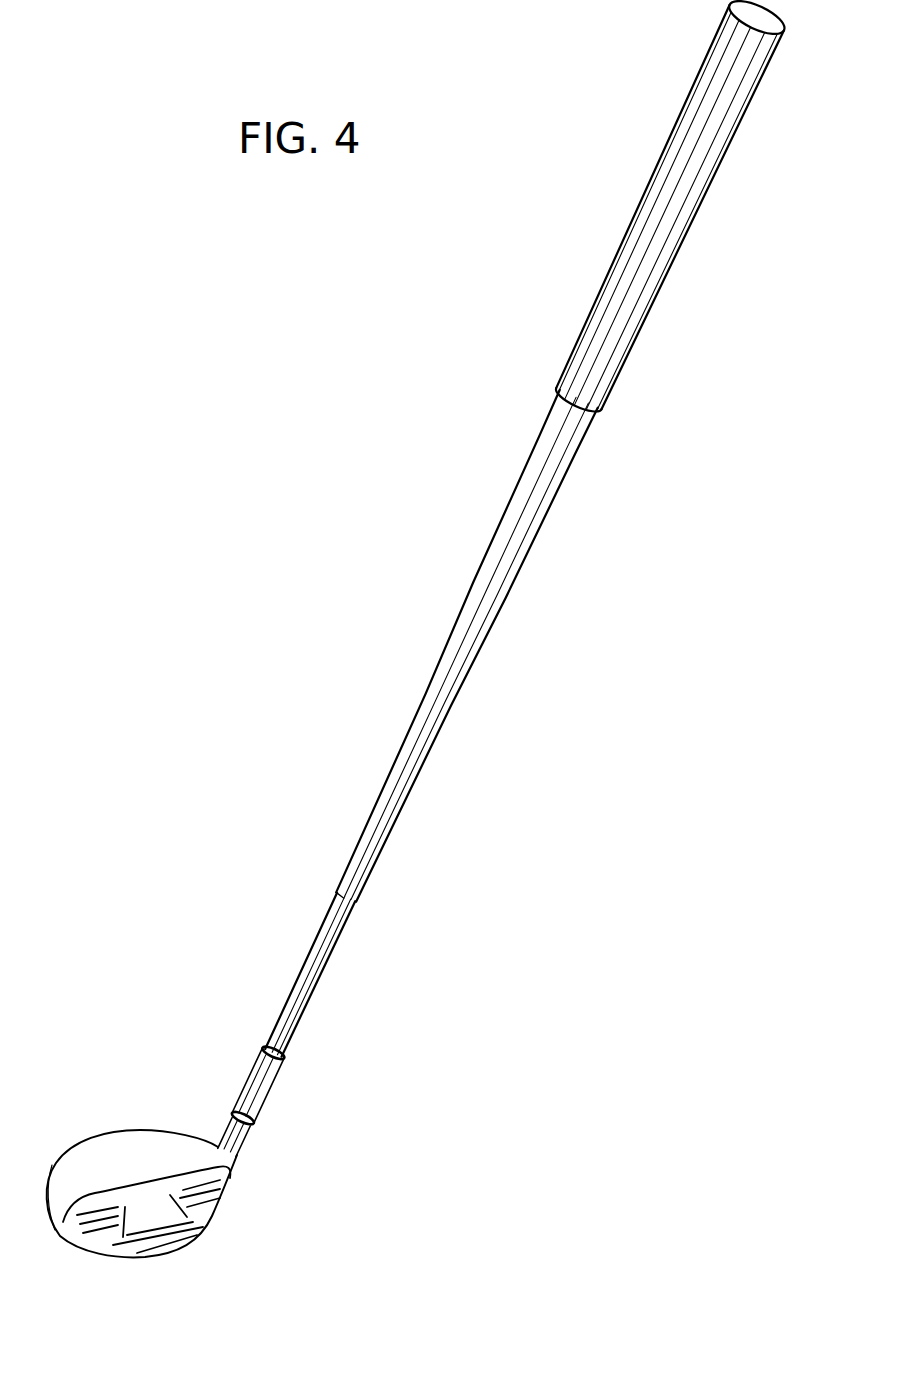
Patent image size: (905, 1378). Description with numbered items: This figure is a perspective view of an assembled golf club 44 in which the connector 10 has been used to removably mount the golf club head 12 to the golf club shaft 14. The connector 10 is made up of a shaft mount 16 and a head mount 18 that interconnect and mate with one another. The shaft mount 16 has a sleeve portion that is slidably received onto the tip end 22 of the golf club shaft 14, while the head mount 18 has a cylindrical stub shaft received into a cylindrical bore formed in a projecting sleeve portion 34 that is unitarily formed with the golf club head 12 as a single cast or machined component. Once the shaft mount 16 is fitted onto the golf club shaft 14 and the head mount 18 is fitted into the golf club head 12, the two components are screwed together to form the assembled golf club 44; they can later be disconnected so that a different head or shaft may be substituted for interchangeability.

The connector 10 is at (418, 628).
The golf club head 12 is at (130, 1142).
The golf club shaft 14 is at (504, 528).
The shaft mount 16 is at (251, 1078).
The head mount 18 is at (240, 1112).
The tip end 22 is at (279, 1021).
The projecting sleeve portion 34 is at (249, 1136).
The assembled golf club 44 is at (572, 744).